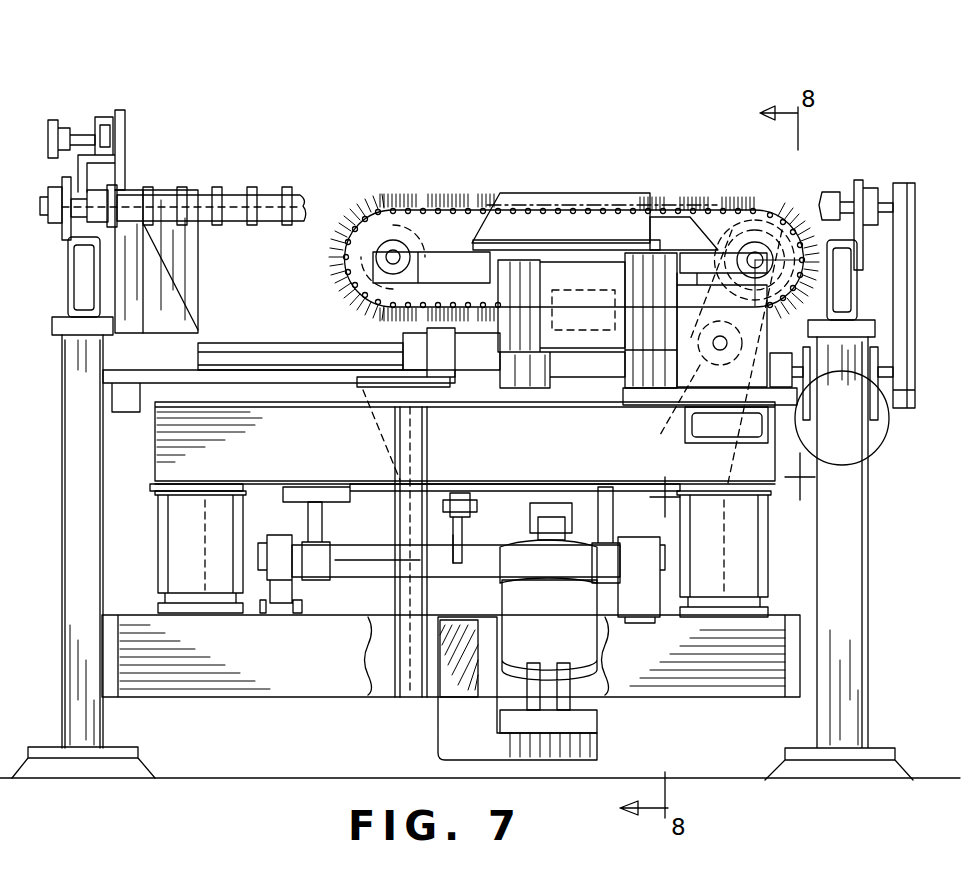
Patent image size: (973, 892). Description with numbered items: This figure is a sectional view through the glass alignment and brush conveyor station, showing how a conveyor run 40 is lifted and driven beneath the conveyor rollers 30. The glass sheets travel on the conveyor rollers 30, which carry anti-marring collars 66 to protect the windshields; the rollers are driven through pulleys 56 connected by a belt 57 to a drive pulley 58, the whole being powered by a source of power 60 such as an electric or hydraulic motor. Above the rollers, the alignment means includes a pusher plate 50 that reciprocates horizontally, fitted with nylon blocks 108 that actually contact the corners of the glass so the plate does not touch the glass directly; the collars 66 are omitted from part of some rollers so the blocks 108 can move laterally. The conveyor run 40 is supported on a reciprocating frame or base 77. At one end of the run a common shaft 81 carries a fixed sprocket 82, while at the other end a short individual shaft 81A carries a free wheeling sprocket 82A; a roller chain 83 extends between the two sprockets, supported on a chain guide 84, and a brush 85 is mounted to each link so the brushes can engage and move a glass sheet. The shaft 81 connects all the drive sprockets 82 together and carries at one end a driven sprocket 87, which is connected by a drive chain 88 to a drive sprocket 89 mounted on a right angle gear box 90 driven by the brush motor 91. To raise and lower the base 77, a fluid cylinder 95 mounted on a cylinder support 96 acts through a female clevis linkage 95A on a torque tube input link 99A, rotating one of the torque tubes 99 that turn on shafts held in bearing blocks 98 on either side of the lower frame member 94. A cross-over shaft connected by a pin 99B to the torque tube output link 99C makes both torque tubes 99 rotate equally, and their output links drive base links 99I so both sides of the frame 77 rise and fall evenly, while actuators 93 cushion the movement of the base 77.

The conveyor rollers 30 is at (268, 200).
The conveyor run 40 is at (583, 180).
The pusher plate 50 is at (105, 115).
The pulleys 56 is at (888, 182).
The belt 57 is at (907, 260).
The drive pulley 58 is at (920, 395).
The source of power 60 is at (878, 440).
The anti-marring collars 66 is at (215, 188).
The reciprocating frame or base 77 is at (300, 448).
The shaft 81 is at (752, 258).
The individual shafts 81A is at (394, 259).
The sprocket 82 is at (765, 245).
The free wheeling sprocket 82A is at (405, 232).
The roller chain 83 is at (655, 212).
The chain guide 84 is at (612, 225).
The brush 85 is at (487, 205).
The driven sprocket 87 is at (770, 240).
The drive chain 88 is at (700, 365).
The drive sprocket 89 is at (728, 445).
The right angle gear box 90 is at (683, 372).
The brush motor 91 is at (594, 330).
The actuators 93 is at (214, 542).
The lower frame member 94 is at (258, 675).
The fluid cylinder 95 is at (560, 633).
The female clevis linkage 95A is at (530, 530).
The cylinder support 96 is at (586, 748).
The bearing blocks 98 is at (278, 543).
The torque tubes 99 is at (355, 572).
The torque tube input link 99A is at (548, 512).
The pin 99B is at (440, 503).
The torque tube output link 99C is at (457, 535).
The base links 99I is at (325, 525).
The nylon blocks 108 is at (128, 127).